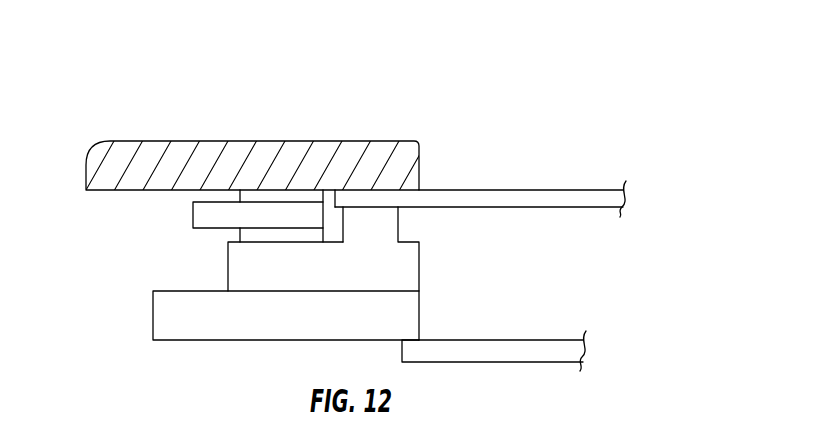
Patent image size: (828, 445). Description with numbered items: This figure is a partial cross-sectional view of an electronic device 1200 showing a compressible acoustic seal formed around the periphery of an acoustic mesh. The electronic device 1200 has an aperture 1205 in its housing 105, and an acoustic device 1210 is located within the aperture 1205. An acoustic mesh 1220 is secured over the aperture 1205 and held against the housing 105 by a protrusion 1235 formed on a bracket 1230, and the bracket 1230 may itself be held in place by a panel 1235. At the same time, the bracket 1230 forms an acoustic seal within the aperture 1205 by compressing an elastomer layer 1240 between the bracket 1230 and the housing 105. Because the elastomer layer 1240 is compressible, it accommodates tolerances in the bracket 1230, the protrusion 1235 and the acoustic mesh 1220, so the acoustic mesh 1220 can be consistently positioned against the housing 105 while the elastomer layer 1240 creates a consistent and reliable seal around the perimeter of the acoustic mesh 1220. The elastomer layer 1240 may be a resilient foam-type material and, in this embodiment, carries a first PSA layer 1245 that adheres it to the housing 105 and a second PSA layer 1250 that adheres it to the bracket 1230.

The housing 105 is at (198, 158).
The electronic device 1200 is at (588, 80).
The aperture 1205 is at (583, 273).
The acoustic device 1210 is at (525, 352).
The acoustic mesh 1220 is at (557, 197).
The bracket 1230 is at (410, 271).
The protrusion 1235 is at (392, 222).
The elastomer layer 1240 is at (203, 212).
The first PSA layer 1245 is at (292, 192).
The second PSA layer 1250 is at (240, 233).